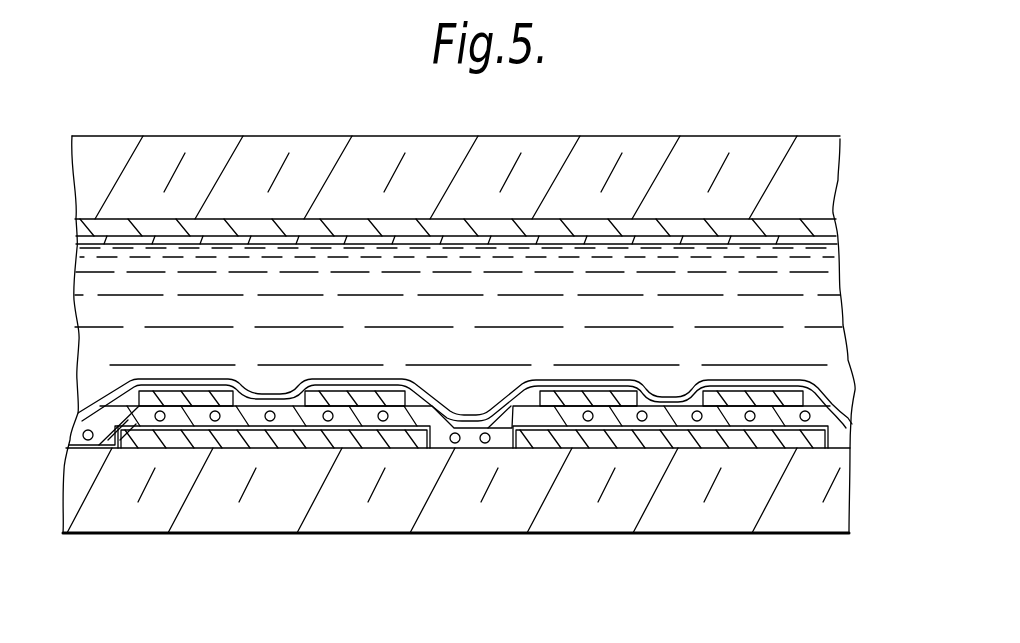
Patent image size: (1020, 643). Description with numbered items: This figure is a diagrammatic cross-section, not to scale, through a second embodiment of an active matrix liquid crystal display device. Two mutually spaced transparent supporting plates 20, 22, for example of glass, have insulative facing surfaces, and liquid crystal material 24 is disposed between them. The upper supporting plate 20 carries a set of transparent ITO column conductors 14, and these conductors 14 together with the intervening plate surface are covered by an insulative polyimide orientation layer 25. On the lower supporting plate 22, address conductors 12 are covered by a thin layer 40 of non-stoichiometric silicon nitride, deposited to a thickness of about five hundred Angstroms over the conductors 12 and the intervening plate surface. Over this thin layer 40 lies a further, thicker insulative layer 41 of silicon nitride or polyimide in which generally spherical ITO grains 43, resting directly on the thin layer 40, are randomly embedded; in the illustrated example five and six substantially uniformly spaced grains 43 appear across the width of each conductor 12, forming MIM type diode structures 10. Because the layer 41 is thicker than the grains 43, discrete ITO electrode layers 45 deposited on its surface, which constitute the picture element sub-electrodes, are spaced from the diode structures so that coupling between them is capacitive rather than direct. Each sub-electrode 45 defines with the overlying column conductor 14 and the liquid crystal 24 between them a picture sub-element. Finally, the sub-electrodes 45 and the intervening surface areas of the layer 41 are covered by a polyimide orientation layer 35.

The upper supporting plate 20 is at (750, 150).
The column conductor 14 is at (812, 234).
The insulative orientation layer 25 is at (828, 255).
The liquid crystal material 24 is at (818, 288).
The thin film transistor 10 is at (462, 451).
The polyimide orientation layer 35 is at (826, 398).
The electrode layer 45 is at (312, 389).
The insulative layer 41 is at (372, 412).
The ITO grains 43 is at (83, 431).
The thin layer of non-stoichiometric silicon nitride 40 is at (120, 441).
The address conductor 12 is at (207, 447).
The lower supporting plate 22 is at (785, 517).